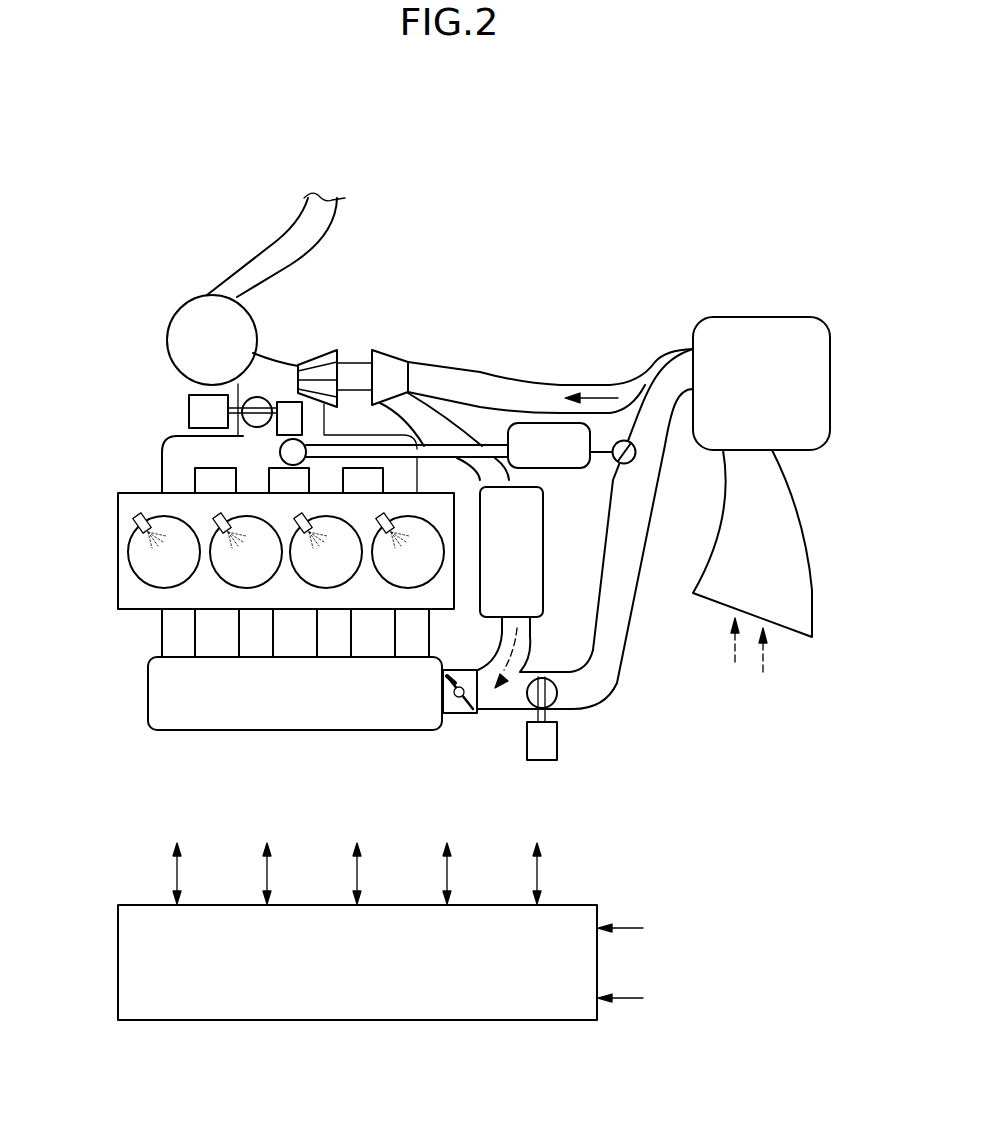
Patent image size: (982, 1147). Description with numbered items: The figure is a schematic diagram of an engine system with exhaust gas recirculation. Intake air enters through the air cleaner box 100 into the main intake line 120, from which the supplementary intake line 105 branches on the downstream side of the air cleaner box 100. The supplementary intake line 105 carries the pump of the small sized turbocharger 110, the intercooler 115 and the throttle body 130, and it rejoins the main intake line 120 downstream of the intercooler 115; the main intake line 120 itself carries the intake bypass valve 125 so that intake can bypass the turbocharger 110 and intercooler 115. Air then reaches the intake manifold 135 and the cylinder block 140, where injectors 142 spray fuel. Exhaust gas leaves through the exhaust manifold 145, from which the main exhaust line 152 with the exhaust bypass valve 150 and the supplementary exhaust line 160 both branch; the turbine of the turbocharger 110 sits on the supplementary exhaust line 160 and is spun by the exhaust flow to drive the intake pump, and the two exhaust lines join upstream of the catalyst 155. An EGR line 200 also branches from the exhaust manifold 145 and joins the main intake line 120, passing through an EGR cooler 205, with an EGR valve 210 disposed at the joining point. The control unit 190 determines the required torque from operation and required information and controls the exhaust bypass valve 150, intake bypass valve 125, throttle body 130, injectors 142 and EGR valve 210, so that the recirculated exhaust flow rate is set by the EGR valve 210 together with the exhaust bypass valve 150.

The air cleaner box 100 is at (763, 317).
The supplementary intake line 105 is at (498, 385).
The small sized turbocharger 110 is at (375, 338).
The intercooler 115 is at (533, 543).
The main intake line 120 is at (618, 623).
The intake bypass valve 125 is at (557, 742).
The throttle body 130 is at (458, 715).
The intake manifold 135 is at (297, 717).
The cylinder block 140 is at (122, 593).
The injector 142 is at (215, 515).
The exhaust manifold 145 is at (177, 454).
The exhaust bypass valve 150 is at (187, 412).
The main exhaust line 152 is at (238, 385).
The catalyst 155 is at (178, 320).
The supplementary exhaust line 160 is at (308, 420).
The control unit 190 is at (357, 1022).
The EGR line 200 is at (423, 453).
The EGR cooler 205 is at (540, 428).
The EGR valve 210 is at (633, 455).